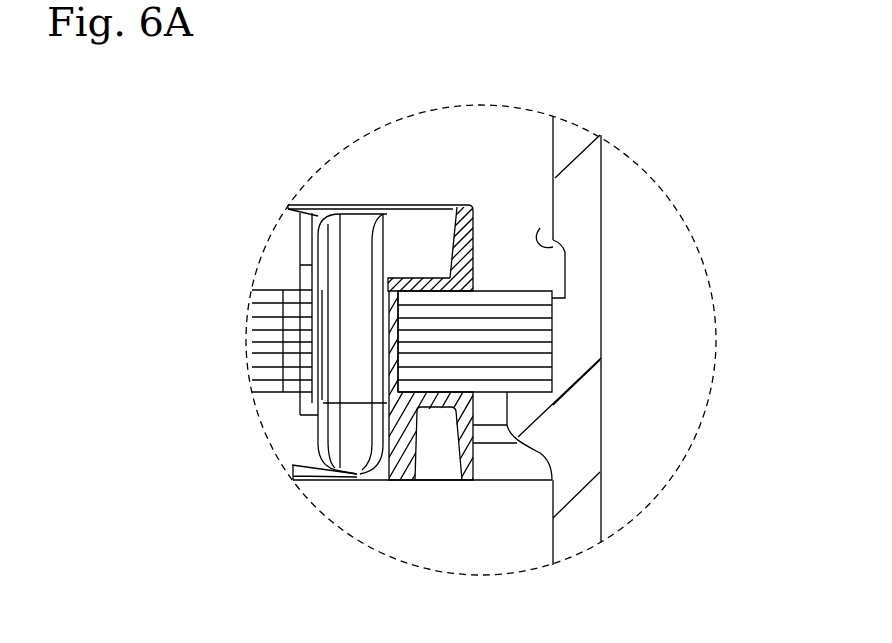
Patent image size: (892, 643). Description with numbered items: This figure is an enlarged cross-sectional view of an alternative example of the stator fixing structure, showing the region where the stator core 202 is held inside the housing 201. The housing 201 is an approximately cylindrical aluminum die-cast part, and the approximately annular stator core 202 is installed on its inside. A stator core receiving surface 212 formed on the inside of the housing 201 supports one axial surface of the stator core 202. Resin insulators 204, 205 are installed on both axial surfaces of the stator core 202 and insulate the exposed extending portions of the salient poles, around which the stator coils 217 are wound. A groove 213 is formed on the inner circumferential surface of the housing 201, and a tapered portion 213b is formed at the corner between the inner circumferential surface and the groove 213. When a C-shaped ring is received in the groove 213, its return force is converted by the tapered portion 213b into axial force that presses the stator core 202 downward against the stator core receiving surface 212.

The housing 201 is at (588, 325).
The stator core 202 is at (540, 360).
The insulator 204 is at (408, 465).
The insulator 205 is at (460, 208).
The stator core receiving surface 212 is at (540, 387).
The groove 213 is at (555, 273).
The tapered portion 213b is at (540, 228).
The stator coil 217 is at (345, 232).